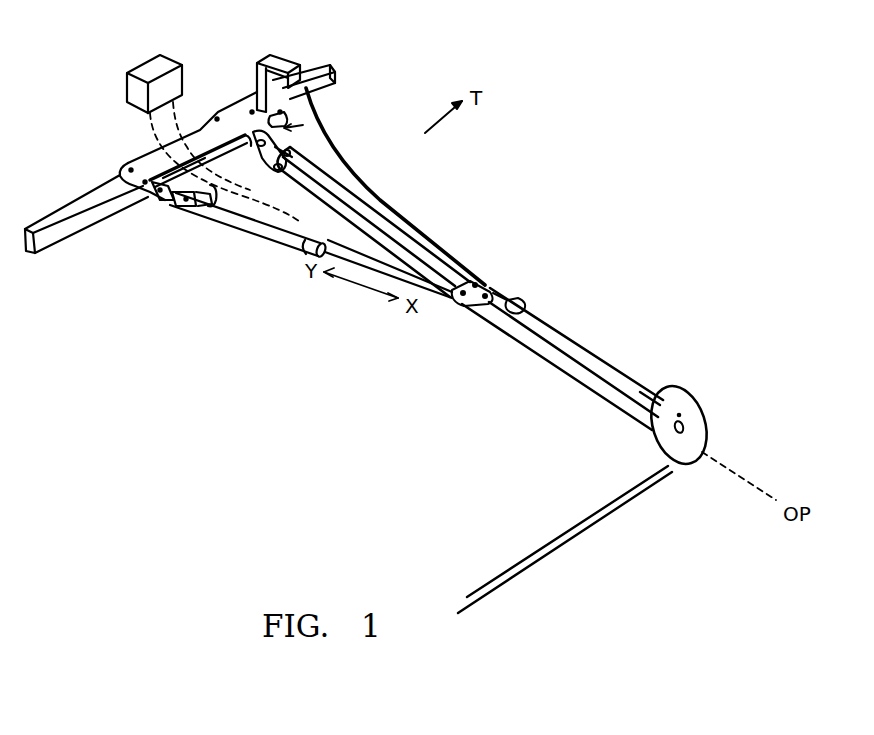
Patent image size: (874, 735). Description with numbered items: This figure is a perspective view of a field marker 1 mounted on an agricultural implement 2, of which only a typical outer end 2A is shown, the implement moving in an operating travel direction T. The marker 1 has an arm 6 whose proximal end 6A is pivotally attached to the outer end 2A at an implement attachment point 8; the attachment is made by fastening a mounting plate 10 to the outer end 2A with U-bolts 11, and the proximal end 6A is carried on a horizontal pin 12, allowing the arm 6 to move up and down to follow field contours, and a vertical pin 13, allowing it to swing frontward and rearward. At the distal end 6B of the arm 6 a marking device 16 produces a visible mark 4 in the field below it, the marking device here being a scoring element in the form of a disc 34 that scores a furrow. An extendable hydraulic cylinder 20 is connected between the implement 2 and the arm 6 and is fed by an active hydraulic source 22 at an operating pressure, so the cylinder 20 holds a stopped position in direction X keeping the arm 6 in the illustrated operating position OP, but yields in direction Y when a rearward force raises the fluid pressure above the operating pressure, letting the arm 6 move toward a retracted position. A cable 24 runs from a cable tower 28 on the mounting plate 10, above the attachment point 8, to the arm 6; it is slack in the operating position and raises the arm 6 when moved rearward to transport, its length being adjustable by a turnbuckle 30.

The field marker 1 is at (478, 213).
The agricultural implement 2 is at (68, 201).
The outer end 2A is at (75, 238).
The visible mark 4 is at (570, 540).
The arm 6 is at (570, 326).
The proximal end 6A is at (313, 163).
The distal end 6B is at (651, 425).
The implement attachment point 8 is at (313, 115).
The mounting plate 10 is at (240, 107).
The U-bolts 11 is at (127, 163).
The horizontal pin 12 is at (258, 210).
The vertical pin 13 is at (254, 150).
The marking device 16 is at (695, 383).
The extendable hydraulic cylinder 20 is at (300, 248).
The active hydraulic source 22 is at (170, 60).
The cable 24 is at (370, 193).
The cable tower 28 is at (280, 52).
The turnbuckle 30 is at (330, 72).
The disc 34 is at (710, 405).